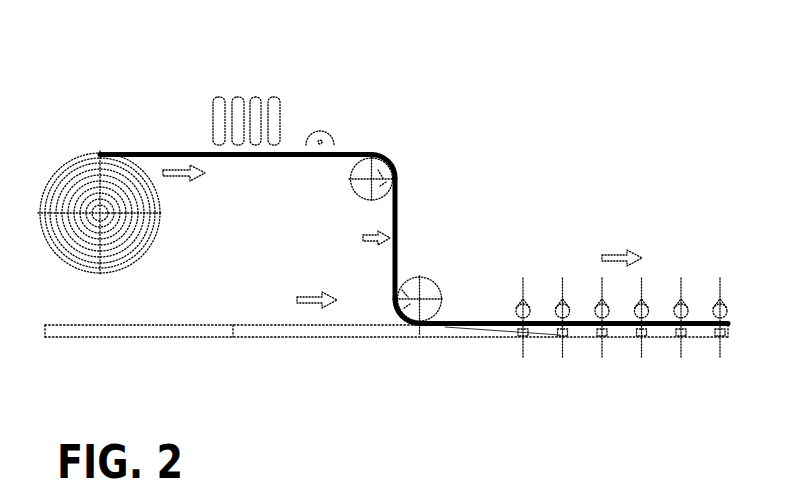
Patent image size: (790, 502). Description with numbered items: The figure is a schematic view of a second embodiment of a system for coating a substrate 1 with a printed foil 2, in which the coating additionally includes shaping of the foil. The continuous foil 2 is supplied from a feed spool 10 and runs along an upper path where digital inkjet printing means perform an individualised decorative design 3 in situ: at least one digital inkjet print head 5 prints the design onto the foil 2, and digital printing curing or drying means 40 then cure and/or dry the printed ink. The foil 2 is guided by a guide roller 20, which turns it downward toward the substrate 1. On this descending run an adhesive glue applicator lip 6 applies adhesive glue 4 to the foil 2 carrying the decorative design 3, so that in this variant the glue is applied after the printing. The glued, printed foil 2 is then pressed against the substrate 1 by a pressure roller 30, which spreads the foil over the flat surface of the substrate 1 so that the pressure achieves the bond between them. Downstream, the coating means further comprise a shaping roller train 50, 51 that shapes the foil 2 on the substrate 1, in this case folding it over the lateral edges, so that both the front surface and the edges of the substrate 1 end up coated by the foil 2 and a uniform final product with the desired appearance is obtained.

The substrate 1 is at (450, 328).
The foil 2 is at (156, 153).
The decorative design 3 is at (348, 150).
The adhesive glue 4 is at (391, 268).
The digital inkjet print head 5 is at (255, 103).
The adhesive glue applicator lip 6 is at (372, 234).
The feed spool 10 is at (75, 187).
The guide roller 20 is at (352, 185).
The pressure roller 30 is at (425, 287).
The digital printing curing or drying means 40 is at (319, 130).
The shaping roller train 50 is at (562, 306).
The shaping roller train 51 is at (565, 331).